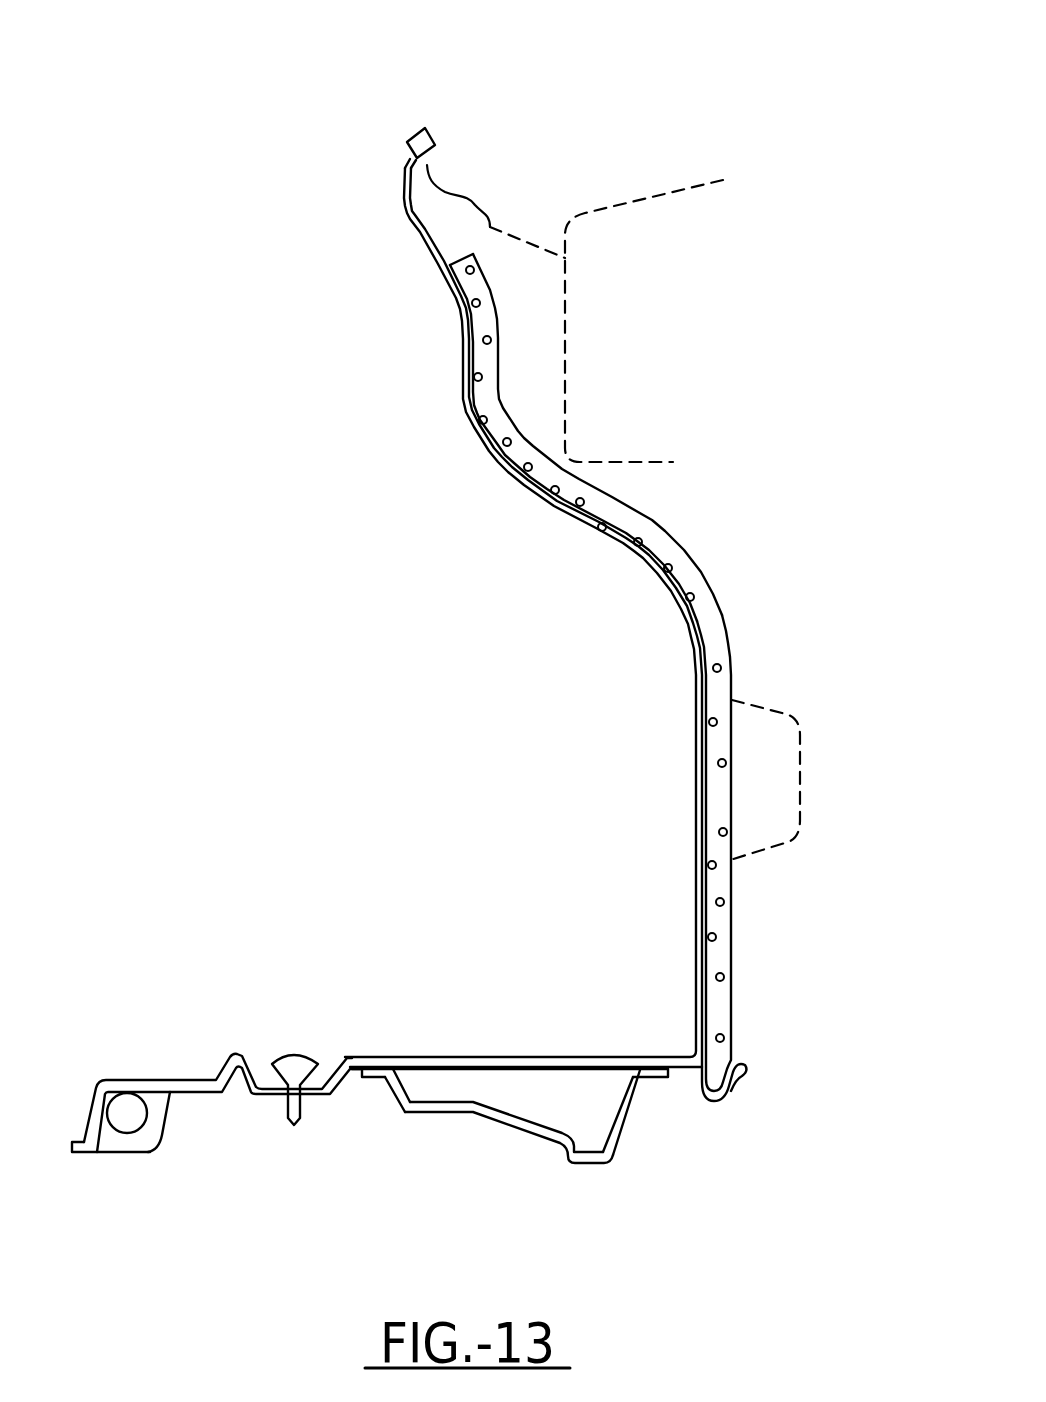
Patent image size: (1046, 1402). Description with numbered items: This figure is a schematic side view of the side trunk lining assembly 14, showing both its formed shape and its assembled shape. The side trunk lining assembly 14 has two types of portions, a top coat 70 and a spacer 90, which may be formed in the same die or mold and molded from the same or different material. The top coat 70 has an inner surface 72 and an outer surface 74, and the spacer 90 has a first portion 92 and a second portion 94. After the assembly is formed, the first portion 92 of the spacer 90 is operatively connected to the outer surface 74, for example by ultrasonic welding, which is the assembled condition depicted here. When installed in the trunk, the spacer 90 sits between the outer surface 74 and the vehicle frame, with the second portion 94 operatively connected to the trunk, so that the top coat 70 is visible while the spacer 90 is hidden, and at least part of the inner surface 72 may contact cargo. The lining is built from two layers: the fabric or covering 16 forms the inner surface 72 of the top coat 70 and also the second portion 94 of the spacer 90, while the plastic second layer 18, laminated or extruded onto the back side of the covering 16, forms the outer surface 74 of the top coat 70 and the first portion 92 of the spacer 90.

The side trunk lining assembly 14 is at (720, 131).
The fabric or covering 16 is at (476, 431).
The second layer 18 is at (697, 798).
The top coat 70 is at (583, 672).
The inner surface 72 is at (640, 562).
The outer surface 74 is at (698, 626).
The spacer 90 is at (438, 1087).
The first portion 92 is at (512, 1087).
The second portion 94 is at (467, 1117).